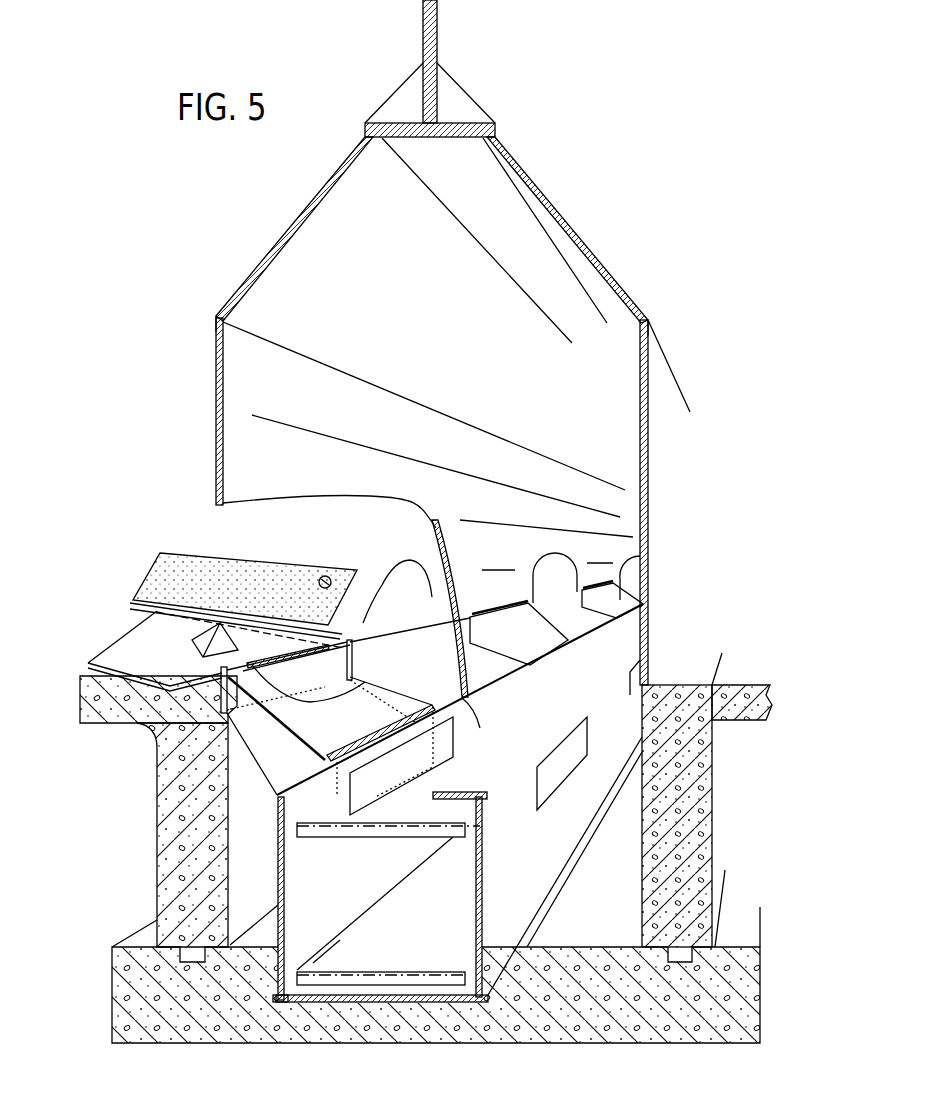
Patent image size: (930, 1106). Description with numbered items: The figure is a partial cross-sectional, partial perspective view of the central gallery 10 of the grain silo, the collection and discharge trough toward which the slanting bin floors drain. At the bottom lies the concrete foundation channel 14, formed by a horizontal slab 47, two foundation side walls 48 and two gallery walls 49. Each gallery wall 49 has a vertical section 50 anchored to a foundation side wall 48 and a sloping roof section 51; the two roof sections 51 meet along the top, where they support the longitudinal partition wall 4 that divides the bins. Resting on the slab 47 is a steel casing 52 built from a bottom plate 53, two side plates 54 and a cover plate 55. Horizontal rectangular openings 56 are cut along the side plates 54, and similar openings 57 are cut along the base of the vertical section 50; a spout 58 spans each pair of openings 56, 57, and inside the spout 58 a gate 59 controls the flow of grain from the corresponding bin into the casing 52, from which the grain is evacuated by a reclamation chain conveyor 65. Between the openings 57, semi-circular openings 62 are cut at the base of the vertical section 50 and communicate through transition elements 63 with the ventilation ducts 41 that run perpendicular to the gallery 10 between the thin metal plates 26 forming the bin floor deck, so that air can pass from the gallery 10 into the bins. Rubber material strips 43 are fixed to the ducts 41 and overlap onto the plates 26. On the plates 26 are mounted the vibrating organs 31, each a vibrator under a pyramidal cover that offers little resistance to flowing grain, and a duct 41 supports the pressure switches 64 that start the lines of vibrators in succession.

The longitudinal wall 4 is at (438, 52).
The central gallery 10 is at (208, 246).
The concrete foundation channel 14 is at (746, 890).
The metal plate 26 is at (136, 657).
The vibrating organ 31 is at (229, 640).
The ventilation duct 41 is at (182, 560).
The rubber material strip 43 is at (136, 600).
The horizontal slab 47 is at (592, 1015).
The foundation side wall 48 is at (204, 864).
The gallery wall 49 is at (202, 322).
The vertical section 50 is at (219, 440).
The sloping roof section 51 is at (292, 232).
The steel casing 52 is at (546, 919).
The bottom plate 53 is at (414, 1006).
The side plate 54 is at (278, 897).
The cover plate 55 is at (461, 793).
The rectangular opening 56 is at (562, 757).
The opening 57 is at (315, 670).
The spout 58 is at (298, 758).
The gate 59 is at (372, 731).
The semi-circular opening 62 is at (413, 592).
The transition element 63 is at (370, 590).
The pressure switch 64 is at (321, 577).
The chain conveyor 65 is at (284, 1000).